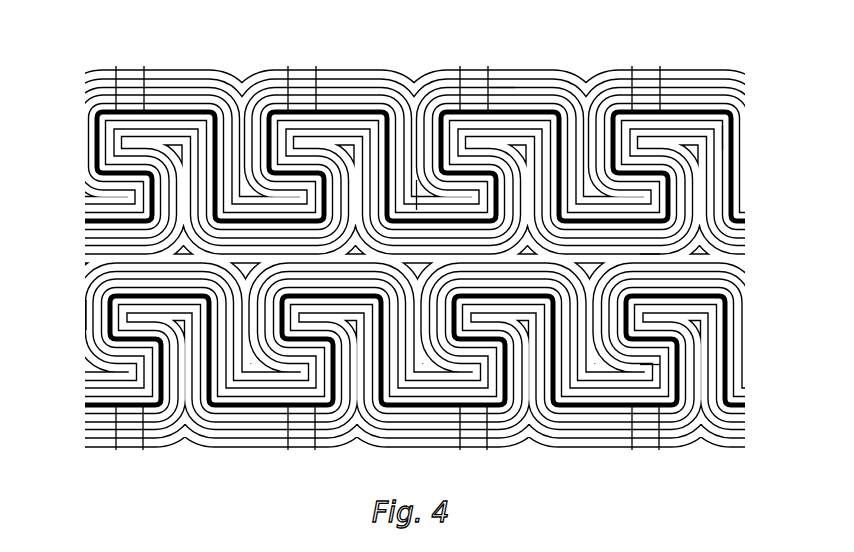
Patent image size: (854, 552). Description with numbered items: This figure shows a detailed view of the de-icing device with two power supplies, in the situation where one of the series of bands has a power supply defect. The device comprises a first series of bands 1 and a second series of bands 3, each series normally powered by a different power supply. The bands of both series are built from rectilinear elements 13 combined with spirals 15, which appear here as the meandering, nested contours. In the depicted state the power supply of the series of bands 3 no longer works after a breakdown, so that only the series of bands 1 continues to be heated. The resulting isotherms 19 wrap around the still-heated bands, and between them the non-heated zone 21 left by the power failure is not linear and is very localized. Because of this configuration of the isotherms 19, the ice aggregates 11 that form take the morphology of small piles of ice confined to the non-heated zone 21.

The first series of bands 1 is at (82, 77).
The second series of bands 3 is at (97, 276).
The ice aggregates 11 is at (650, 368).
The rectilinear elements 13 is at (502, 88).
The spirals 15 is at (415, 193).
The isotherms 19 is at (728, 132).
The non-heated zone 21 is at (646, 256).